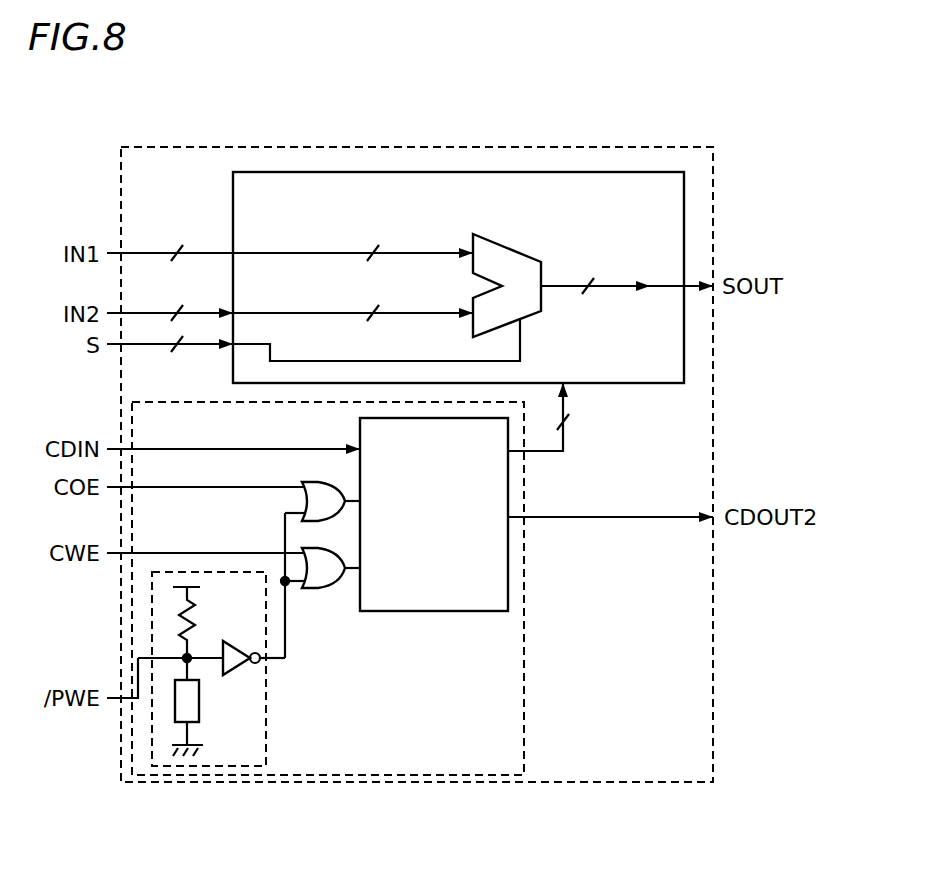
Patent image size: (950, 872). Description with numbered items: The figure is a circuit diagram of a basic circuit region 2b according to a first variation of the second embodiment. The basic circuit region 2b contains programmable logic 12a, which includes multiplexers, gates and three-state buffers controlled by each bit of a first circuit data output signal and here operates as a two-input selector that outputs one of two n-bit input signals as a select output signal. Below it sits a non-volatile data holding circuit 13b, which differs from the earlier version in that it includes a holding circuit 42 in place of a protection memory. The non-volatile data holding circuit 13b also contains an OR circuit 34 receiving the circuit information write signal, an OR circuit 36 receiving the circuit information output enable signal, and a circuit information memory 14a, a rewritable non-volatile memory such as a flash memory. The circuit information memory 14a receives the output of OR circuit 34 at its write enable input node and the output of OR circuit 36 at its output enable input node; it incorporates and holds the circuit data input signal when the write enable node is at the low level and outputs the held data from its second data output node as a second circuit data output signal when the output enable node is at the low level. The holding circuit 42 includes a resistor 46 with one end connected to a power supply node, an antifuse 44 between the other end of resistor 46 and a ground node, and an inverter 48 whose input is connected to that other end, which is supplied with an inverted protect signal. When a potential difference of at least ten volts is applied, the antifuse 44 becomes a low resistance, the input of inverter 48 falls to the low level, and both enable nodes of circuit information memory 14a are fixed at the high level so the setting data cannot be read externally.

The basic circuit region 2b is at (634, 147).
The programmable logic 12a is at (447, 172).
The non-volatile data holding circuit 13b is at (493, 775).
The circuit information memory 14a is at (508, 588).
The OR circuit 36 is at (309, 482).
The OR circuit 34 is at (316, 590).
The holding circuit 42 is at (211, 701).
The antifuse 44 is at (201, 706).
The resistor 46 is at (197, 633).
The inverter 48 is at (240, 648).